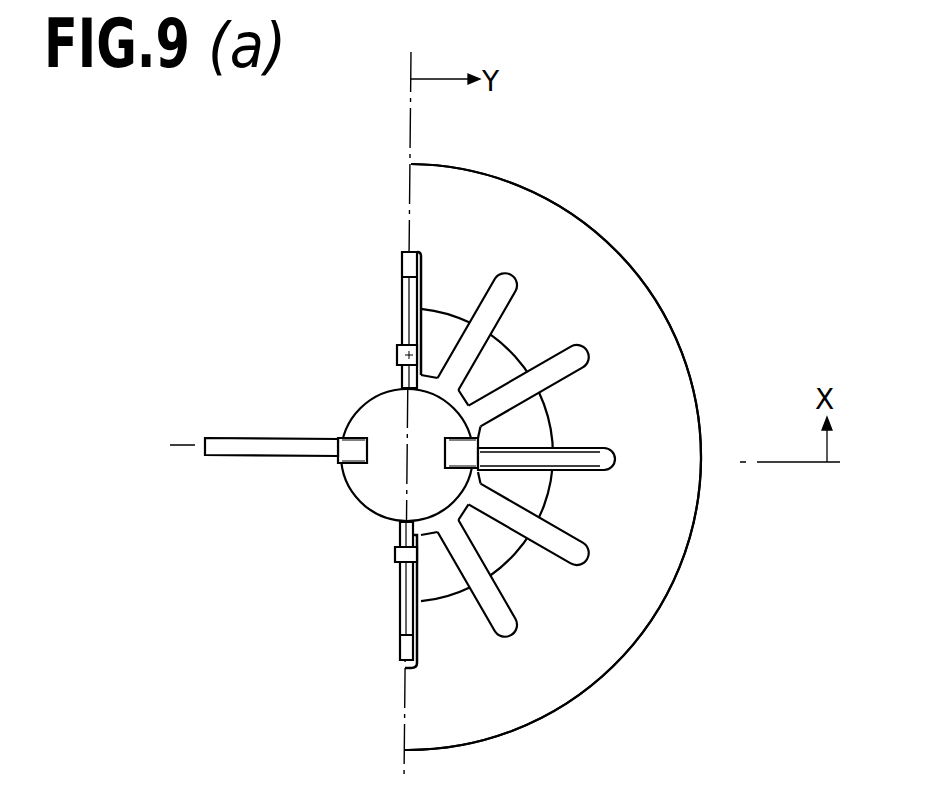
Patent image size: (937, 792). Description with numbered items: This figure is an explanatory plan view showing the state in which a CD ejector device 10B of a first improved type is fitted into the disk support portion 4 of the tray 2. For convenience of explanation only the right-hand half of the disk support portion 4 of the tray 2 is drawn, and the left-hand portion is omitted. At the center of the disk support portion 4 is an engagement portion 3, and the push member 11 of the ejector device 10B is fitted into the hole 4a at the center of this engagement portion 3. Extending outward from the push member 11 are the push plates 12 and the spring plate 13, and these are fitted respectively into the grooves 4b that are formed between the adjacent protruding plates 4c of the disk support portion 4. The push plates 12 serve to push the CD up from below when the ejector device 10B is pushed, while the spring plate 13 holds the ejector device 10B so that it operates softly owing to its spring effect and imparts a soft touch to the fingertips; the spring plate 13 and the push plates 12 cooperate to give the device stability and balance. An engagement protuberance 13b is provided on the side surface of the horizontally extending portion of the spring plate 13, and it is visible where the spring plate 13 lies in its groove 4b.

The tray 2 is at (705, 245).
The engagement portion 3 is at (553, 411).
The disk support portion 4 is at (640, 562).
The hole 4a is at (530, 343).
The grooves 4b is at (498, 627).
The protruding plates 4c is at (443, 322).
The CD ejector device 10B is at (467, 429).
The push member 11 is at (375, 485).
The push plate 12 is at (254, 448).
The spring plate 13 is at (400, 288).
The engagement protuberance 13b is at (392, 552).